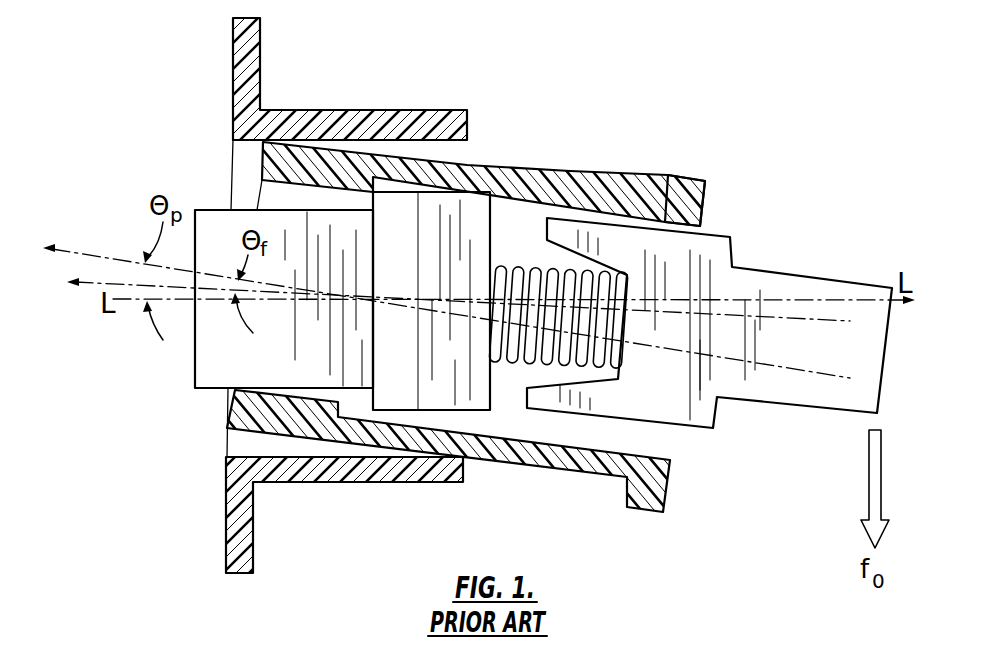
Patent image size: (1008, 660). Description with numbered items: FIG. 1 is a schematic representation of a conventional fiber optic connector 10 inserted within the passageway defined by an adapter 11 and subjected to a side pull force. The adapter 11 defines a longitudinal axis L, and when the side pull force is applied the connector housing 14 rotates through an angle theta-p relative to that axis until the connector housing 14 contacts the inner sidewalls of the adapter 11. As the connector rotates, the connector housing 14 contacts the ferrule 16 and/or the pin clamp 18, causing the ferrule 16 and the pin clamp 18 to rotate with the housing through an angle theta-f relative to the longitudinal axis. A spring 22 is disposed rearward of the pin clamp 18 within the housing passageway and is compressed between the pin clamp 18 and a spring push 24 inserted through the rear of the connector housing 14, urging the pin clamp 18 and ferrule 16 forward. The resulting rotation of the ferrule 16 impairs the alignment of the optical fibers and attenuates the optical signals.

The fiber optic connector 10 is at (616, 148).
The adapter 11 is at (443, 112).
The connector housing 14 is at (705, 203).
The ferrule 16 is at (320, 372).
The pin clamp 18 is at (469, 397).
The spring 22 is at (565, 358).
The spring push 24 is at (700, 413).